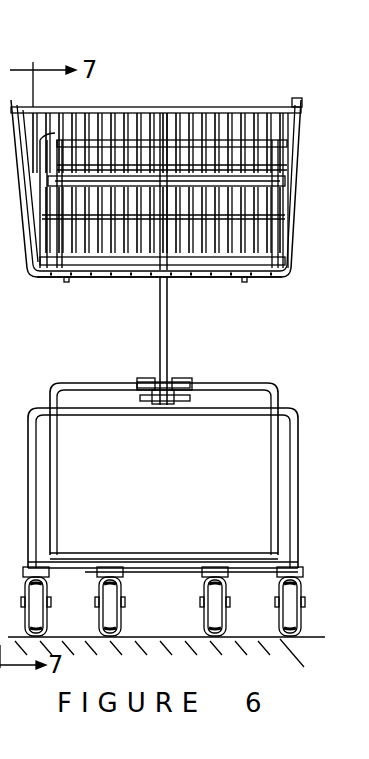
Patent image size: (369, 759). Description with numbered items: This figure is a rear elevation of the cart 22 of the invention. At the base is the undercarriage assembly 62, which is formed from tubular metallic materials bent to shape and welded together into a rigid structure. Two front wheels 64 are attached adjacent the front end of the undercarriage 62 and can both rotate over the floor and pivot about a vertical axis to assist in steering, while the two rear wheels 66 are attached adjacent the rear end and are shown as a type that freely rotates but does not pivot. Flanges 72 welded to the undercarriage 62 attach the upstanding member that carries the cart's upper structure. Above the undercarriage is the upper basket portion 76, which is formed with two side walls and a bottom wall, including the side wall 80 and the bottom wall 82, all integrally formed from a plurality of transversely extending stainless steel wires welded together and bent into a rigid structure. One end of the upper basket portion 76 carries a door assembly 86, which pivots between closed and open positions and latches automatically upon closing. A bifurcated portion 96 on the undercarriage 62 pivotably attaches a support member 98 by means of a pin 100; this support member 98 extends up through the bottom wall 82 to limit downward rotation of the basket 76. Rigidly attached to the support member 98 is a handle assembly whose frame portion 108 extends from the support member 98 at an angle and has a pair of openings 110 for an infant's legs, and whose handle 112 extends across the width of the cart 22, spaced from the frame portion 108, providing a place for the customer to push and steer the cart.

The cart 22 is at (131, 98).
The door assembly 86 is at (205, 106).
The frame portion 108 is at (283, 152).
The upper basket portion 76 is at (303, 187).
The side wall 80 is at (297, 212).
The handle 112 is at (227, 182).
The bottom wall 82 is at (120, 278).
The support member 98 is at (167, 312).
The openings 110 is at (220, 227).
The bifurcated portion 96 is at (156, 384).
The flanges 72 is at (137, 403).
The pin 100 is at (180, 400).
The undercarriage assembly 62 is at (302, 536).
The rear wheels 66 is at (48, 630).
The front wheels 64 is at (120, 620).